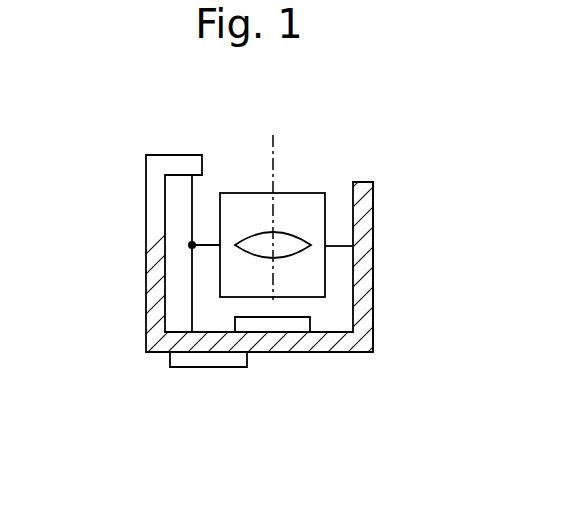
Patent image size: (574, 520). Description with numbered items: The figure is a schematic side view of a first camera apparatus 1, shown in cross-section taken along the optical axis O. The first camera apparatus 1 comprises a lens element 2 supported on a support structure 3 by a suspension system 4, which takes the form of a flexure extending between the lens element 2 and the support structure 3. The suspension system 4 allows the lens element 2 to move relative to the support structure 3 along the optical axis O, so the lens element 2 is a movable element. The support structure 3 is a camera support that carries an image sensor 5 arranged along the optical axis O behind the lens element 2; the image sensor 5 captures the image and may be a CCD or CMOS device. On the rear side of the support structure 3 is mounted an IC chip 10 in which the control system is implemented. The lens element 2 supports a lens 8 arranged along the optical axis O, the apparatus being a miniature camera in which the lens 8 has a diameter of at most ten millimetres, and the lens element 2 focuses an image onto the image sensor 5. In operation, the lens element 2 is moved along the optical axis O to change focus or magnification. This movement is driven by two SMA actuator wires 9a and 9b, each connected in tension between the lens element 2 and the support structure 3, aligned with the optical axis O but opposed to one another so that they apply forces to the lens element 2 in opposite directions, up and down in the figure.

The first camera apparatus 1 is at (153, 123).
The lens element 2 is at (300, 205).
The support structure 3 is at (365, 203).
The suspension system 4 is at (340, 247).
The image sensor 5 is at (288, 323).
The lens 8 is at (252, 238).
The SMA actuator wire 9a is at (190, 203).
The SMA actuator wire 9b is at (188, 292).
The IC chip 10 is at (210, 357).
The optical axis O is at (273, 148).